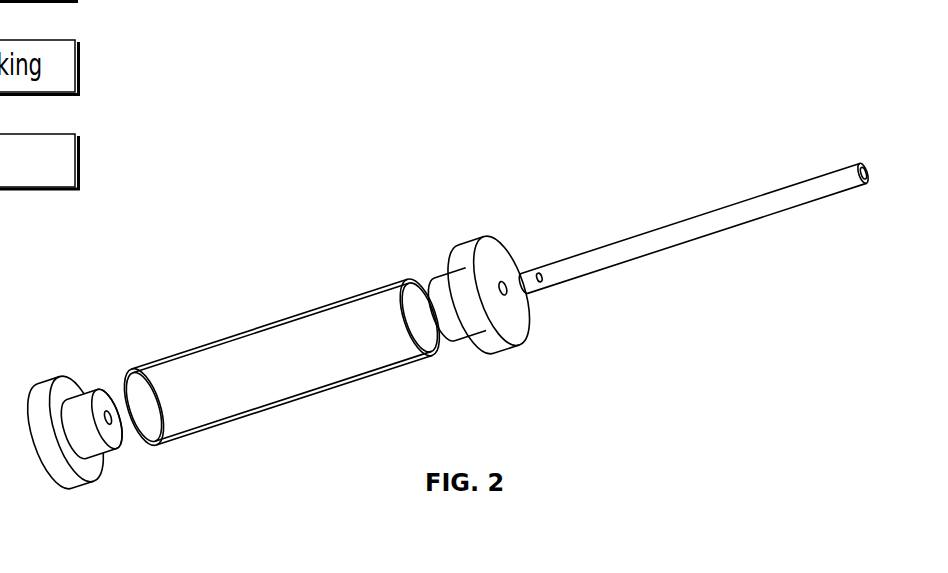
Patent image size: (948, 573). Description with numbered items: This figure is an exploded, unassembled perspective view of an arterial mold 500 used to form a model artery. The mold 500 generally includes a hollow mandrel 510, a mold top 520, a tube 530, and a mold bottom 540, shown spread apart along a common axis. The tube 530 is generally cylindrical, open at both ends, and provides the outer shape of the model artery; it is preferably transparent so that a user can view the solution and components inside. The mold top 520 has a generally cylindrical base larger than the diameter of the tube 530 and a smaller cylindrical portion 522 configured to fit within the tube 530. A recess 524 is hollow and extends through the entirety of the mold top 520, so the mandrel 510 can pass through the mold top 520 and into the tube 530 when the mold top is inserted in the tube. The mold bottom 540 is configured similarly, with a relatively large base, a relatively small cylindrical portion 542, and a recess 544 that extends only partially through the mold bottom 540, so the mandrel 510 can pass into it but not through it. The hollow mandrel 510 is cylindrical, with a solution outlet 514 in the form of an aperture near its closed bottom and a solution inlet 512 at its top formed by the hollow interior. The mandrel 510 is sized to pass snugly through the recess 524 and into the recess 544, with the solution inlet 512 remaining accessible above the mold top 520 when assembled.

The arterial mold 500 is at (752, 35).
The hollow mandrel 510 is at (747, 200).
The solution inlet 512 is at (867, 168).
The solution outlet 514 is at (542, 286).
The mold top 520 is at (468, 243).
The smaller cylindrical portion 522 is at (442, 272).
The recess 524 is at (506, 284).
The tube 530 is at (256, 328).
The mold bottom 540 is at (53, 375).
The cylindrical portion 542 is at (93, 388).
The recess 544 is at (112, 425).